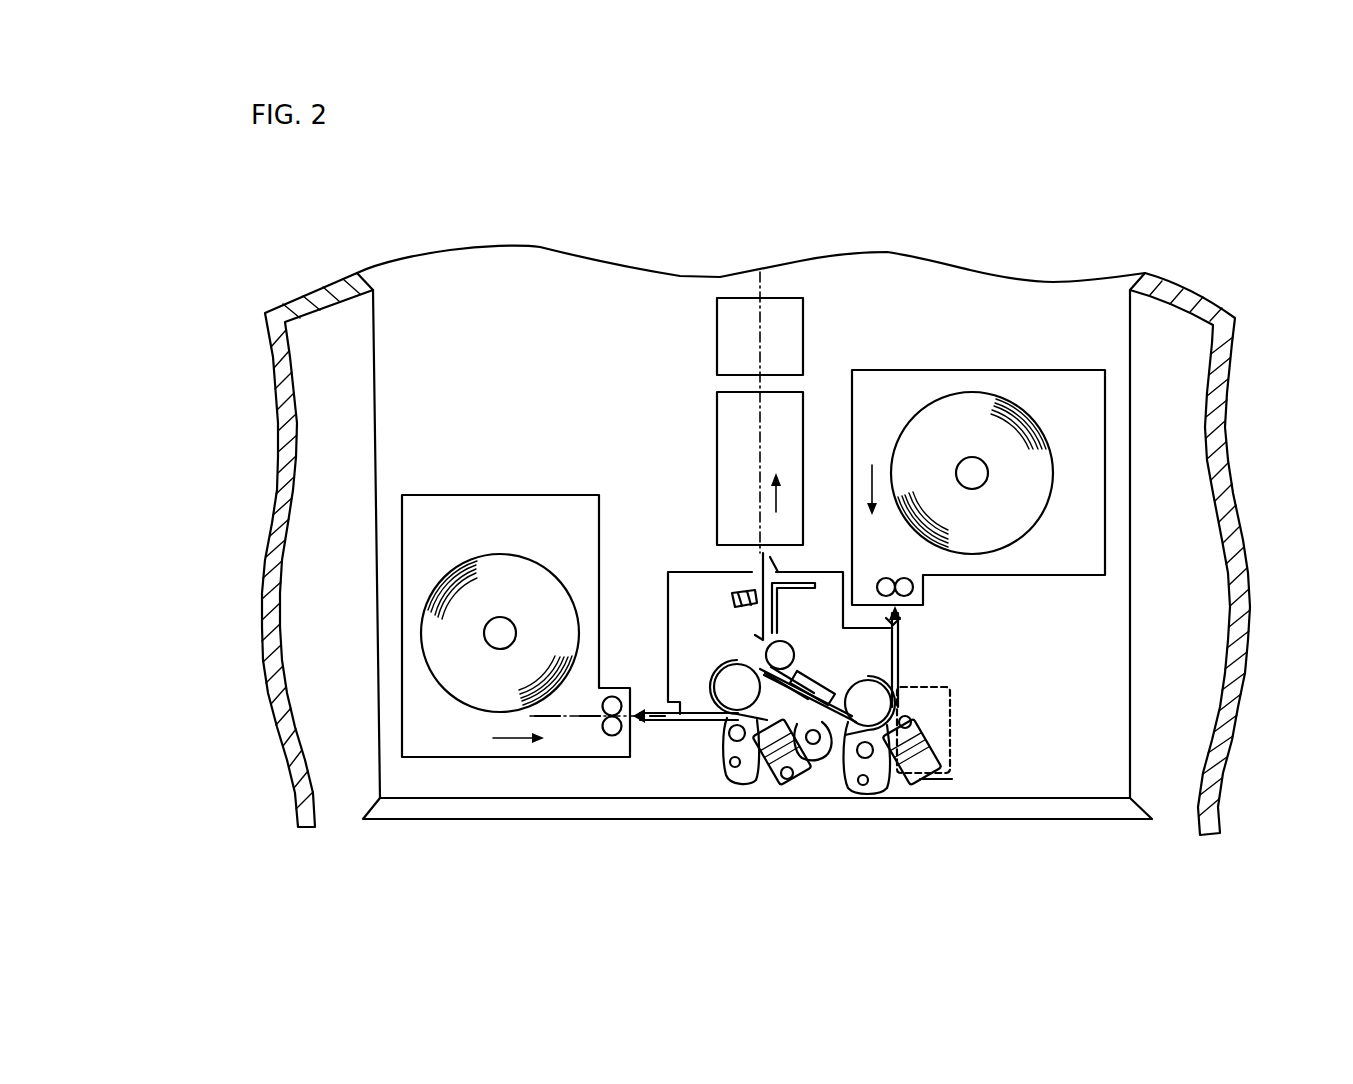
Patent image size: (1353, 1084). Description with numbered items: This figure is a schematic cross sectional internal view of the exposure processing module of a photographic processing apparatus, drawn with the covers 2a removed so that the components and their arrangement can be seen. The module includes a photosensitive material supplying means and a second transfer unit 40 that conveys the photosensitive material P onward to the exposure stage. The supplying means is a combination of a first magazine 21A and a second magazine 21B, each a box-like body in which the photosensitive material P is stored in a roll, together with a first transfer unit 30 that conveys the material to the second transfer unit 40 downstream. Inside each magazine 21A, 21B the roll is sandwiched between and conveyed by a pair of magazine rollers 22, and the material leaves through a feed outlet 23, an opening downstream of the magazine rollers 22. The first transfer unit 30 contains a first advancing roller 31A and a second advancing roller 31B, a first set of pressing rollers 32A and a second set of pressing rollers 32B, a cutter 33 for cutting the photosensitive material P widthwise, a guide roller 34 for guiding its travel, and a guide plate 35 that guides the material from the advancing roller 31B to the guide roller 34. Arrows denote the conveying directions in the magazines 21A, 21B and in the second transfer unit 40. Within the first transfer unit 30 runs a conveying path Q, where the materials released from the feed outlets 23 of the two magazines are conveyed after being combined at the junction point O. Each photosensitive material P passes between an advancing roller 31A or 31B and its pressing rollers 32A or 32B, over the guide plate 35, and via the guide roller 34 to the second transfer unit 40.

The covers 2a is at (345, 797).
The first magazine 21A is at (432, 757).
The second magazine 21B is at (1038, 369).
The magazine rollers 22 is at (897, 570).
The feed outlet 23 is at (898, 618).
The first transfer unit 30 is at (666, 556).
The first advancing roller 31A is at (703, 737).
The second advancing roller 31B is at (920, 700).
The first set of pressing rollers 32A is at (757, 745).
The second set of pressing rollers 32B is at (880, 750).
The cutter 33 is at (737, 593).
The guide roller 34 is at (785, 700).
The guide plate 35 is at (845, 750).
The second transfer unit 40 is at (708, 348).
The photosensitive material P is at (886, 578).
The conveying path Q is at (760, 573).
The junction point O is at (743, 651).